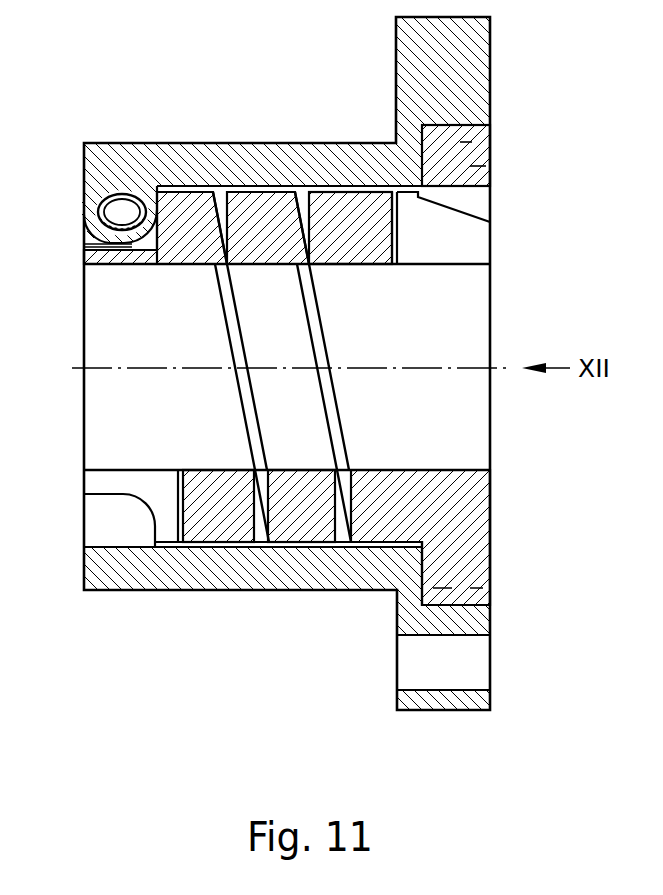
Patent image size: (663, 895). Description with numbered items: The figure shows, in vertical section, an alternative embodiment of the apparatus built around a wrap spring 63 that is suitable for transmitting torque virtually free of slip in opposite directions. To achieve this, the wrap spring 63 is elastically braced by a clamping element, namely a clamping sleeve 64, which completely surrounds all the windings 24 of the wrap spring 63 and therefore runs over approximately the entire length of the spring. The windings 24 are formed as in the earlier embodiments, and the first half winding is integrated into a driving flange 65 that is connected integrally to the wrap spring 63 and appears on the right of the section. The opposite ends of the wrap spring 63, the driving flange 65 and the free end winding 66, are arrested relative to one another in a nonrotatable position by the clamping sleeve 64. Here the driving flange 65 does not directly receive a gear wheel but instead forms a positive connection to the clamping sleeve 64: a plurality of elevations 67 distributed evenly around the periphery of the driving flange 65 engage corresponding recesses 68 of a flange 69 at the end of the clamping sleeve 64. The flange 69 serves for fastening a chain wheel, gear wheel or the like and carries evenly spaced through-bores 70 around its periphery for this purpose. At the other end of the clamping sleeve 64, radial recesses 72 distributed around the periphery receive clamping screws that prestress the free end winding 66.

The windings 24 is at (262, 210).
The wrap spring 63 is at (457, 517).
The clamping sleeve 64 is at (203, 157).
The driving flange 65 is at (470, 166).
The free end winding 66 is at (110, 200).
The elevations 67 is at (508, 135).
The recesses 68 is at (463, 130).
The flange 69 is at (458, 55).
The through-bores 70 is at (470, 662).
The radial recesses 72 is at (105, 517).